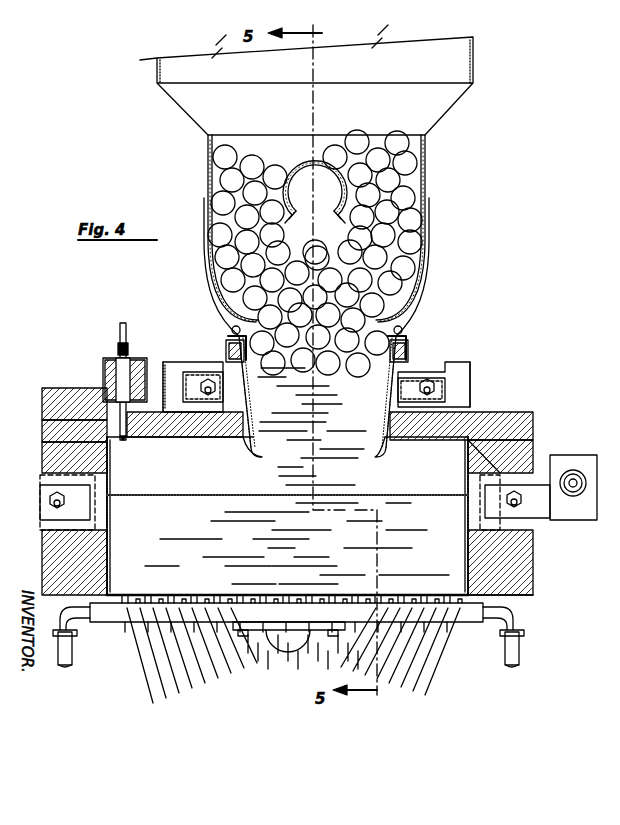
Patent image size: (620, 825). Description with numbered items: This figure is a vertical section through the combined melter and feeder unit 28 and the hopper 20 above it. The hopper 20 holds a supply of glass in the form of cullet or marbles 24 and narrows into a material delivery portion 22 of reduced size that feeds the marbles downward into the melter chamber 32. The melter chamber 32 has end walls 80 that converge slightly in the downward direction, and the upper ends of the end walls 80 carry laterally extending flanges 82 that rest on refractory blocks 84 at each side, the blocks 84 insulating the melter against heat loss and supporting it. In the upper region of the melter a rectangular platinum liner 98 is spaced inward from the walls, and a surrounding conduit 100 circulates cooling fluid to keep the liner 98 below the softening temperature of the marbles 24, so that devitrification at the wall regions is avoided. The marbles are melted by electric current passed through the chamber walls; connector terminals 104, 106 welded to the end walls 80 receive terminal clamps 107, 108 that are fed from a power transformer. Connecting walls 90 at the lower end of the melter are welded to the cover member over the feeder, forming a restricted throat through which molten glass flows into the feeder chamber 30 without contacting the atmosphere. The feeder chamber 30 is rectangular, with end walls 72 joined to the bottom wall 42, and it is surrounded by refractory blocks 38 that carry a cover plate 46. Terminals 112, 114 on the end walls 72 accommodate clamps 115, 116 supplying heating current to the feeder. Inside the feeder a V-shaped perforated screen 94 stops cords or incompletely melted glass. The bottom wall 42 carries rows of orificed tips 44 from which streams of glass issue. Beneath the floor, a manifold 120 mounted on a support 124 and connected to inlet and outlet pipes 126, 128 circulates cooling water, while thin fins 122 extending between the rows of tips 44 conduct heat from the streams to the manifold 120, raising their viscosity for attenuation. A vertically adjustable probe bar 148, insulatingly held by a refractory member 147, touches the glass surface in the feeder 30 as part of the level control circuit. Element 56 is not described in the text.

The hopper 20 is at (157, 70).
The material delivery portion 22 is at (206, 166).
The marbles 24 is at (220, 150).
The melter and feeder unit 28 is at (493, 390).
The feeder chamber 30 is at (300, 557).
The melter chamber 32 is at (410, 360).
The blocks 38 is at (533, 452).
The bottom wall 42 is at (470, 570).
The tips 44 is at (150, 612).
The cover plate 46 is at (497, 412).
The nozzles 56 is at (170, 670).
The end walls 72 is at (470, 545).
The end walls 80 is at (408, 375).
The flanges 82 is at (228, 352).
The blocks 84 is at (408, 350).
The connecting walls 90 is at (388, 440).
The screen 94 is at (128, 500).
The liner 98 is at (400, 326).
The conduit 100 is at (406, 345).
The connector terminal 104 is at (440, 372).
The connector terminal 106 is at (225, 385).
The terminal clamp 107 is at (472, 366).
The terminal clamp 108 is at (176, 364).
The terminal 112 is at (500, 455).
The terminal 114 is at (80, 470).
The clamp 115 is at (590, 520).
The clamp 116 is at (55, 518).
The manifold 120 is at (110, 622).
The fins 122 is at (230, 620).
The support 124 is at (288, 652).
The inlet pipe 126 is at (522, 648).
The outlet pipe 128 is at (55, 665).
The supporting member 147 is at (104, 365).
The probe bar 148 is at (120, 325).